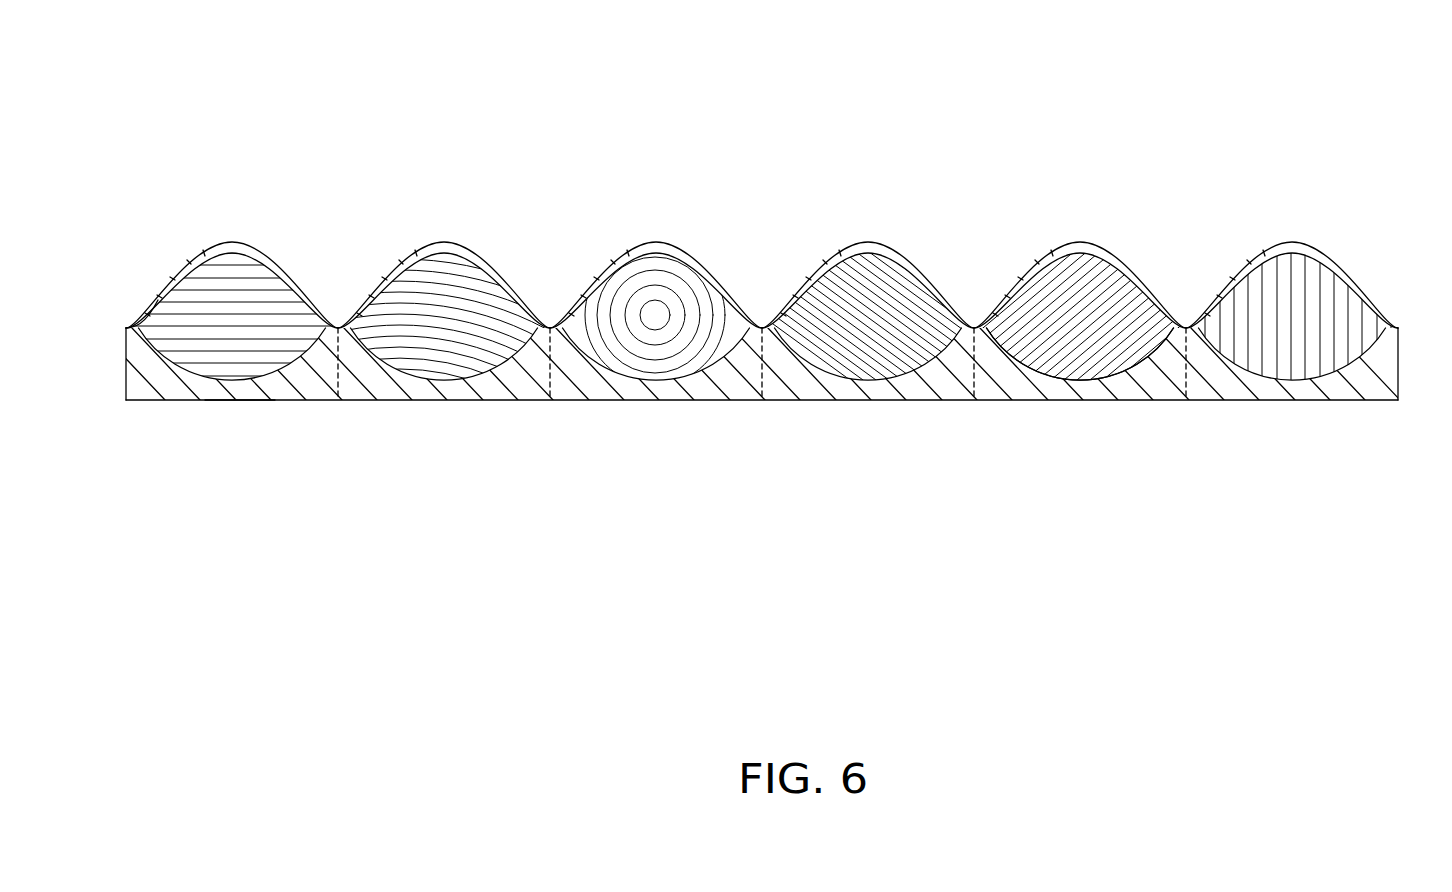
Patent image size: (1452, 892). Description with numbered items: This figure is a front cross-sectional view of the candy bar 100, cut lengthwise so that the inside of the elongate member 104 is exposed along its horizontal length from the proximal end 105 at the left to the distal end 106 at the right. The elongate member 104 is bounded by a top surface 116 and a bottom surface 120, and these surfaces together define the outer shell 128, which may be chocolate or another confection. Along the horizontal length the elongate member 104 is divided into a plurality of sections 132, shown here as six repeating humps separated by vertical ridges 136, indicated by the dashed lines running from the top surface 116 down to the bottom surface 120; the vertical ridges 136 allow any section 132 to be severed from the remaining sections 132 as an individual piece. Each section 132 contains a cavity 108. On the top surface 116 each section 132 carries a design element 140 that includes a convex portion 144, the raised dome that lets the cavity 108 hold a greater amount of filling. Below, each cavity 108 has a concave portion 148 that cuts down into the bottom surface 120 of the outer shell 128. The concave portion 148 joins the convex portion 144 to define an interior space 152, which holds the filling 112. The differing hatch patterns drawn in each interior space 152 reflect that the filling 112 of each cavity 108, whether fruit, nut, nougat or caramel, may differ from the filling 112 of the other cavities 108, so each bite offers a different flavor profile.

The candy bar 100 is at (268, 116).
The elongate member 104 is at (561, 549).
The proximal end 105 is at (110, 384).
The distal end 106 is at (1428, 380).
The cavity 108 is at (790, 293).
The filling 112 is at (255, 283).
The top surface 116 is at (690, 250).
The bottom surface 120 is at (706, 394).
The outer shell 128 is at (124, 327).
The section 132 is at (240, 418).
The vertical ridge 136 is at (340, 398).
The design element 140 is at (441, 243).
The convex portion 144 is at (1070, 246).
The concave portion 148 is at (1077, 383).
The interior space 152 is at (874, 291).